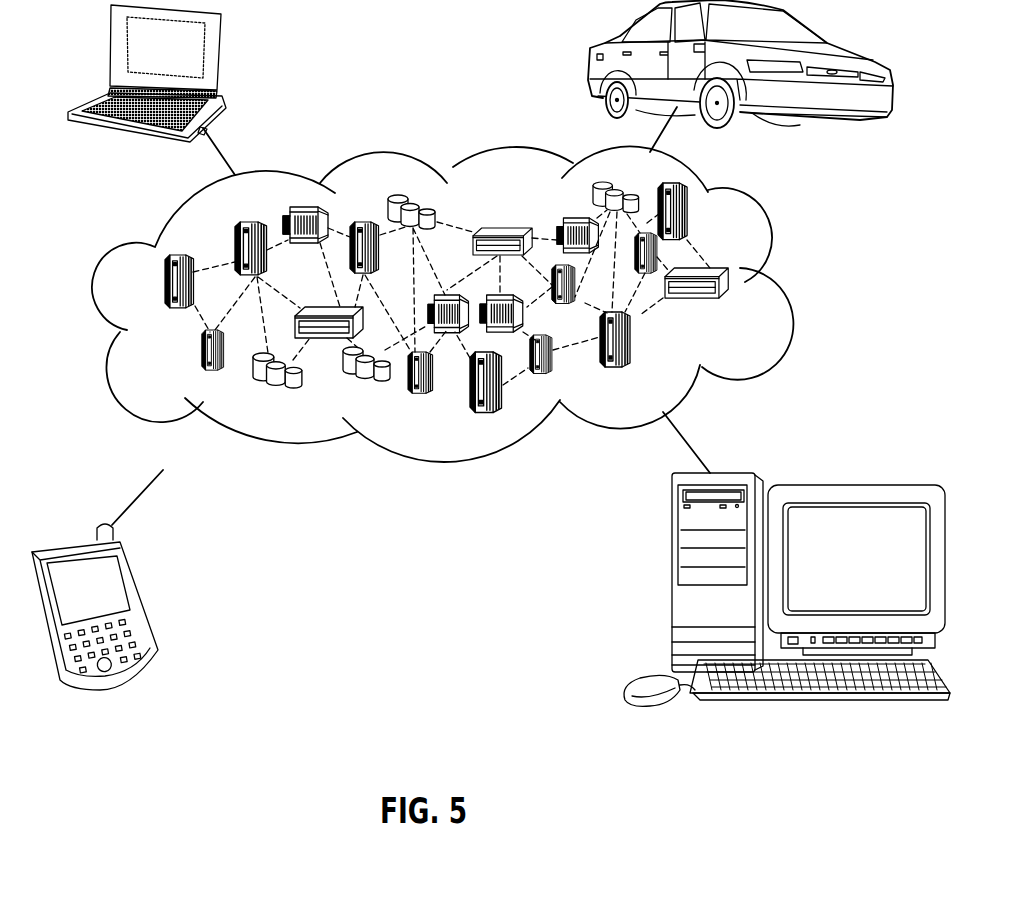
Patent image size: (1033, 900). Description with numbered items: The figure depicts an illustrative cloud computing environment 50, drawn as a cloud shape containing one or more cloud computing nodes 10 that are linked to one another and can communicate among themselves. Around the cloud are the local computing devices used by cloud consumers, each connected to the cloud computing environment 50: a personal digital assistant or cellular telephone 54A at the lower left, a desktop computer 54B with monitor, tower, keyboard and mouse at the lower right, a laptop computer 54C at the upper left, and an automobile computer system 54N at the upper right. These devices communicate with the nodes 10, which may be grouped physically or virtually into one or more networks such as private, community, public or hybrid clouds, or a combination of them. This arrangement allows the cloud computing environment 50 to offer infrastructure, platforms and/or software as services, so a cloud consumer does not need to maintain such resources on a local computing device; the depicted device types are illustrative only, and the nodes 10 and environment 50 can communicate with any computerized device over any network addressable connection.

The cloud computing nodes 10 is at (748, 301).
The cloud computing environment 50 is at (772, 247).
The personal digital assistant or cellular telephone 54A is at (143, 602).
The desktop computer 54B is at (868, 485).
The laptop computer 54C is at (222, 52).
The automobile computer system 54N is at (600, 58).